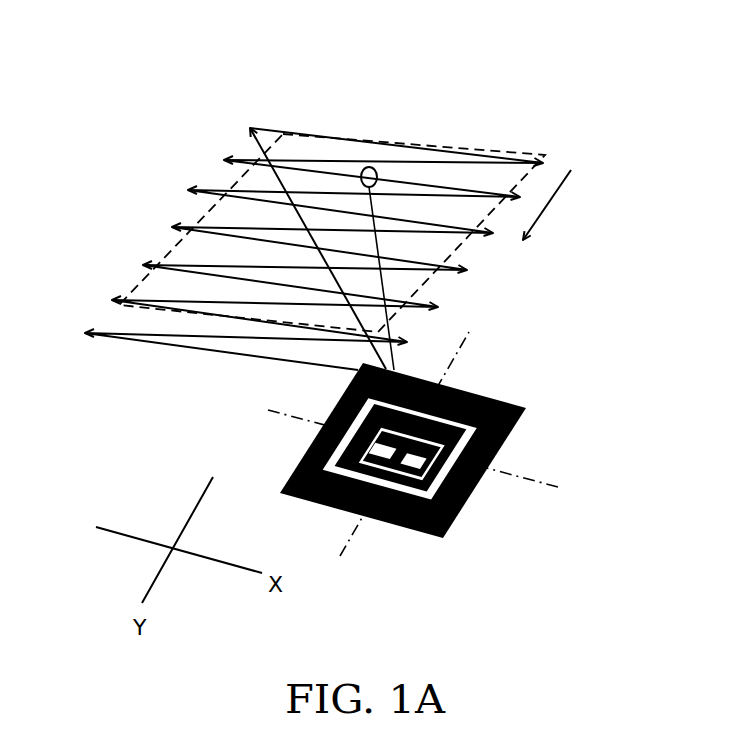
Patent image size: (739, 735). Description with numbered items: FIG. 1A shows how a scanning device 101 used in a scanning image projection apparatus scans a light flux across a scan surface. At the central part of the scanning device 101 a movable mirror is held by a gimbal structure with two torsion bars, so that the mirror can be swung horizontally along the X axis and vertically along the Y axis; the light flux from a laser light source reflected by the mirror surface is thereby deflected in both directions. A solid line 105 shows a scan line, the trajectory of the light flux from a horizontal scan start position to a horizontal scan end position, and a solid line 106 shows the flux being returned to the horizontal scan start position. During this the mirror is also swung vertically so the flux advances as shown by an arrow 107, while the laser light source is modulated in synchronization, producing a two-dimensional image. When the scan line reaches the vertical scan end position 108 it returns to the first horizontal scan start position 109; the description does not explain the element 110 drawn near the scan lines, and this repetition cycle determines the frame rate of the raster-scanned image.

The scanning device 101 is at (442, 444).
The solid line 105 is at (467, 152).
The solid line 106 is at (411, 160).
The arrow 107 is at (571, 205).
The vertical scan end position 108 is at (349, 387).
The first horizontal scan start position 109 is at (250, 128).
The scan lines 110 is at (167, 289).